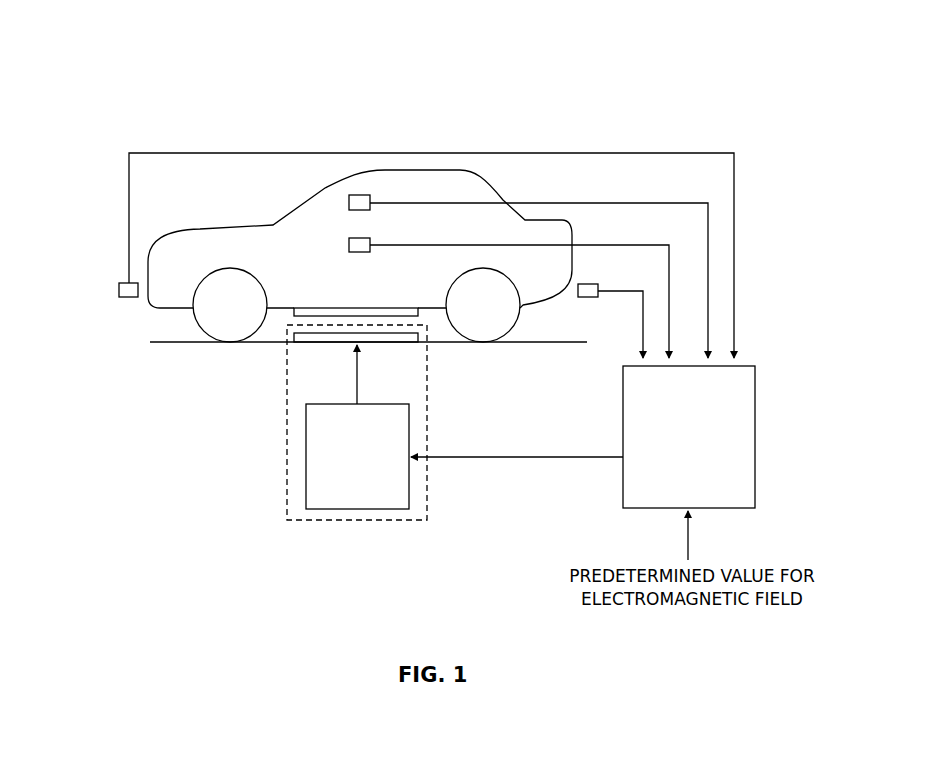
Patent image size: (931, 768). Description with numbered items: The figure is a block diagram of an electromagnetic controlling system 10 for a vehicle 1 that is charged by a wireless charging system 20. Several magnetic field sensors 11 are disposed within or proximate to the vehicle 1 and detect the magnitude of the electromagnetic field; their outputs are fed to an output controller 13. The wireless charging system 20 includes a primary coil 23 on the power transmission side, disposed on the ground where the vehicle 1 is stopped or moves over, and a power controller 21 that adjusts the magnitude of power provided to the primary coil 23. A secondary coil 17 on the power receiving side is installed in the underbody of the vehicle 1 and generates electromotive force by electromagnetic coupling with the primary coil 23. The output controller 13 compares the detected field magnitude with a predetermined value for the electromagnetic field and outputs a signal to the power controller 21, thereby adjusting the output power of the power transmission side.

The electromagnetic controlling system 10 is at (668, 131).
The vehicle 1 is at (164, 318).
The magnetic field sensor 11 is at (360, 195).
The output controller 13 is at (623, 432).
The secondary coil 17 is at (419, 313).
The wireless charging system 20 is at (287, 468).
The power controller 21 is at (393, 495).
The primary coil 23 is at (291, 343).